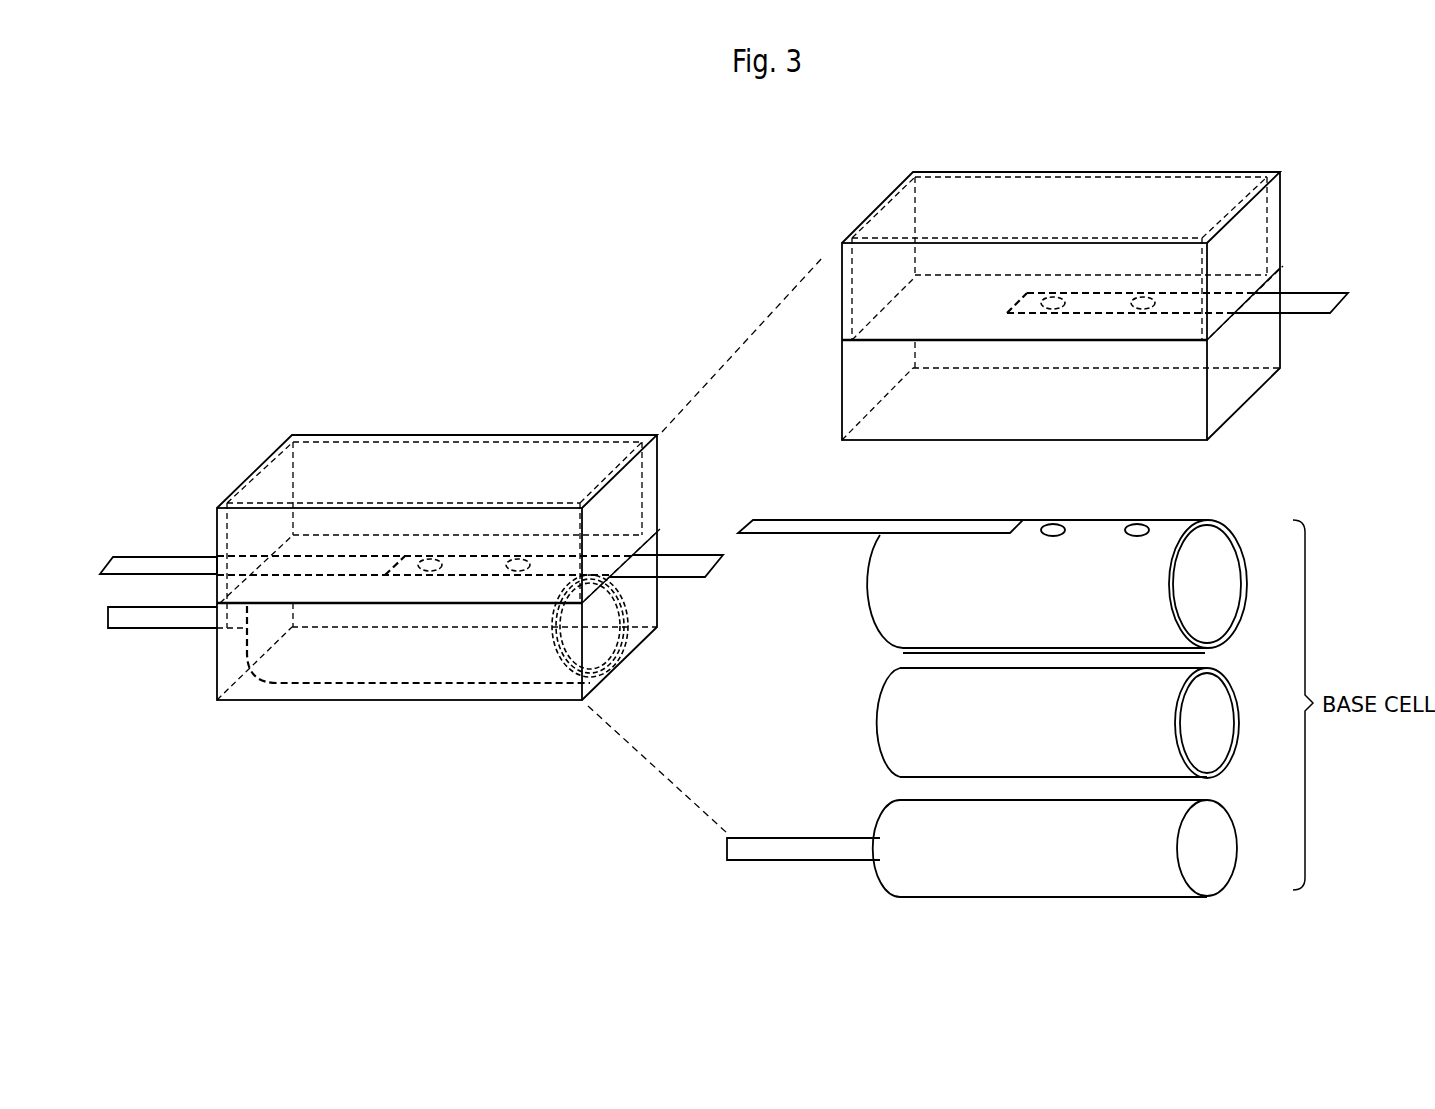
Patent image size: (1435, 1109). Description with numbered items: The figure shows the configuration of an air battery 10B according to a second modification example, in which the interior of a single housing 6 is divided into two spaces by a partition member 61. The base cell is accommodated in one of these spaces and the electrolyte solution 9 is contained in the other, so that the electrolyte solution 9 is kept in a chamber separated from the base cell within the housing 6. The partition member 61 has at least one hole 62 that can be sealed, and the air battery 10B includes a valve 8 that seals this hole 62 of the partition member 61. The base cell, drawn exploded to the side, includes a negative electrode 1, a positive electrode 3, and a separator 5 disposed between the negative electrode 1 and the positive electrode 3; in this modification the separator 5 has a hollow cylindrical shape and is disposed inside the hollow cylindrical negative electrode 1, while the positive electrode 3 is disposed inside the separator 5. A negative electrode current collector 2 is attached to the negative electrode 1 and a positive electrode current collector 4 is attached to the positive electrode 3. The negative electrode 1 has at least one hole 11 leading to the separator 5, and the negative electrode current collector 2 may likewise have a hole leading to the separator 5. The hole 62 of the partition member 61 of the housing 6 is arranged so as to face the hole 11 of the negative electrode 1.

The air battery 10B is at (455, 430).
The housing 6 is at (658, 484).
The electrolyte solution 9 is at (1133, 207).
The partition member 61 is at (1270, 292).
The hole 62 is at (1053, 296).
The valve 8 is at (1313, 303).
The negative electrode current collector 2 is at (968, 527).
The hole 11 is at (1053, 524).
The negative electrode 1 is at (1222, 538).
The separator 5 is at (1222, 686).
The positive electrode 3 is at (1222, 822).
The positive electrode current collector 4 is at (795, 838).